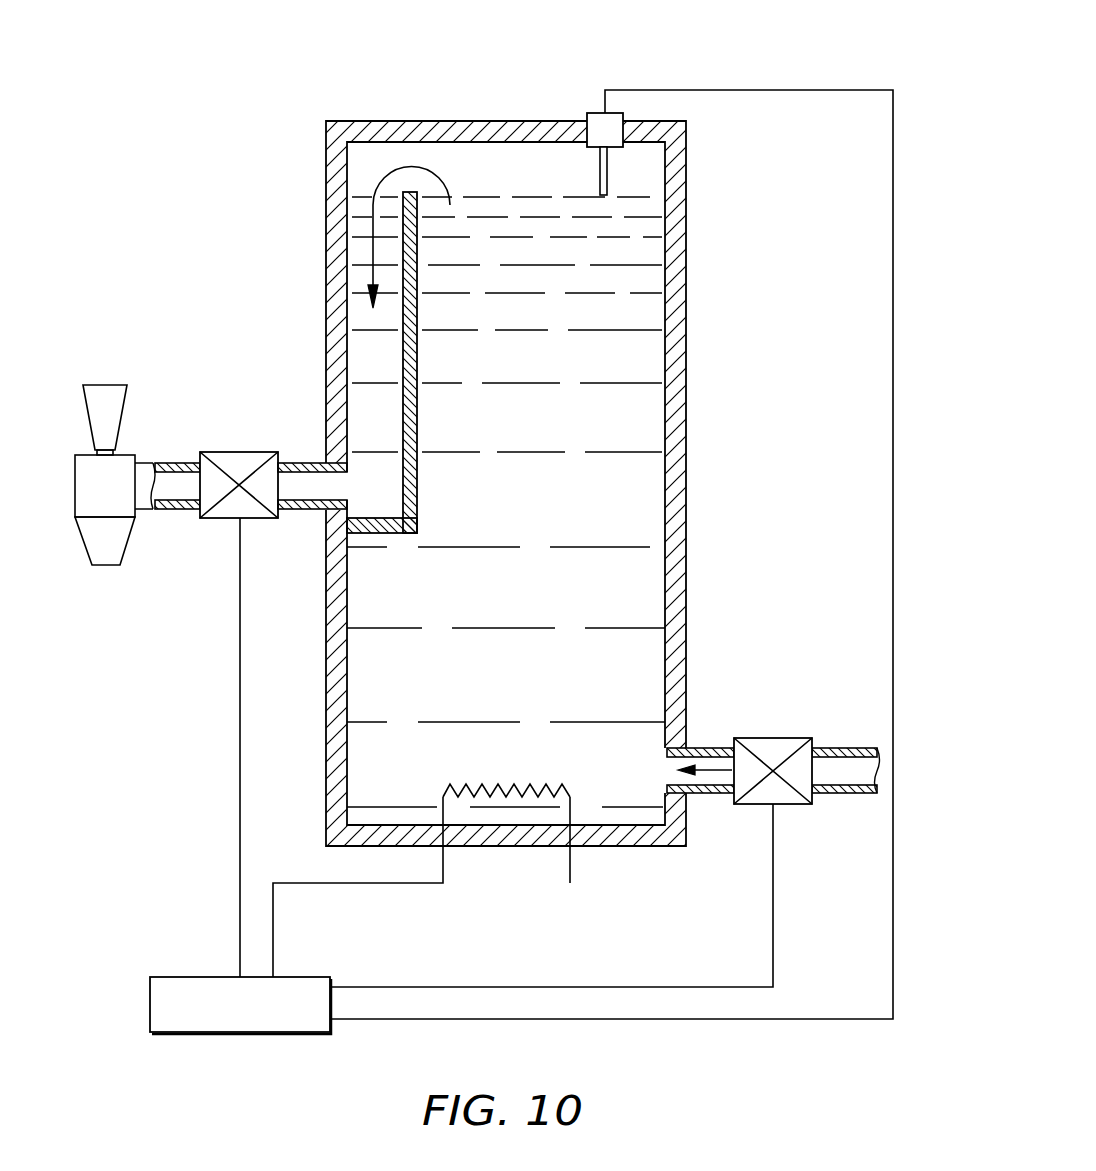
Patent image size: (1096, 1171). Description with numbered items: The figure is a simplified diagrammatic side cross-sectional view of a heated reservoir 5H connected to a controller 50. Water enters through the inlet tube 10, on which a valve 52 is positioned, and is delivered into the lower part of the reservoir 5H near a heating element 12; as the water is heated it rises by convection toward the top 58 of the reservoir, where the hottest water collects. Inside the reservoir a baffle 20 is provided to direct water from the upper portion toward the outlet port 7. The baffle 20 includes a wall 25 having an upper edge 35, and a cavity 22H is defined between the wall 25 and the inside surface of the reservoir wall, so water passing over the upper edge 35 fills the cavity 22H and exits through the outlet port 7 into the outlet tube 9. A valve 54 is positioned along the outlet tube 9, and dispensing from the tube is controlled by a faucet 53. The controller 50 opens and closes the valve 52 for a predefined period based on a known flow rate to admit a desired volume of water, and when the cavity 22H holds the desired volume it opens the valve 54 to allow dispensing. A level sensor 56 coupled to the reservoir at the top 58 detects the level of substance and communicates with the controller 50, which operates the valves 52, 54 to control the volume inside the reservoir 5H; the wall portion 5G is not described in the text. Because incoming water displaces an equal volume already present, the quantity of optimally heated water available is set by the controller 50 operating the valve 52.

The reservoir 5H is at (716, 396).
The tank wall 5G is at (687, 580).
The top 58 is at (538, 121).
The baffle 20 is at (418, 282).
The cavity 22H is at (363, 314).
The upper edge 35 is at (410, 191).
The wall 25 is at (410, 318).
The level sensor 56 is at (625, 132).
The faucet 53 is at (102, 364).
The outlet tube 9 is at (180, 490).
The valve 54 is at (233, 452).
The outlet port 7 is at (327, 507).
The inlet tube 10 is at (848, 775).
The valve 52 is at (772, 738).
The heating element 12 is at (570, 810).
The controller 50 is at (180, 977).